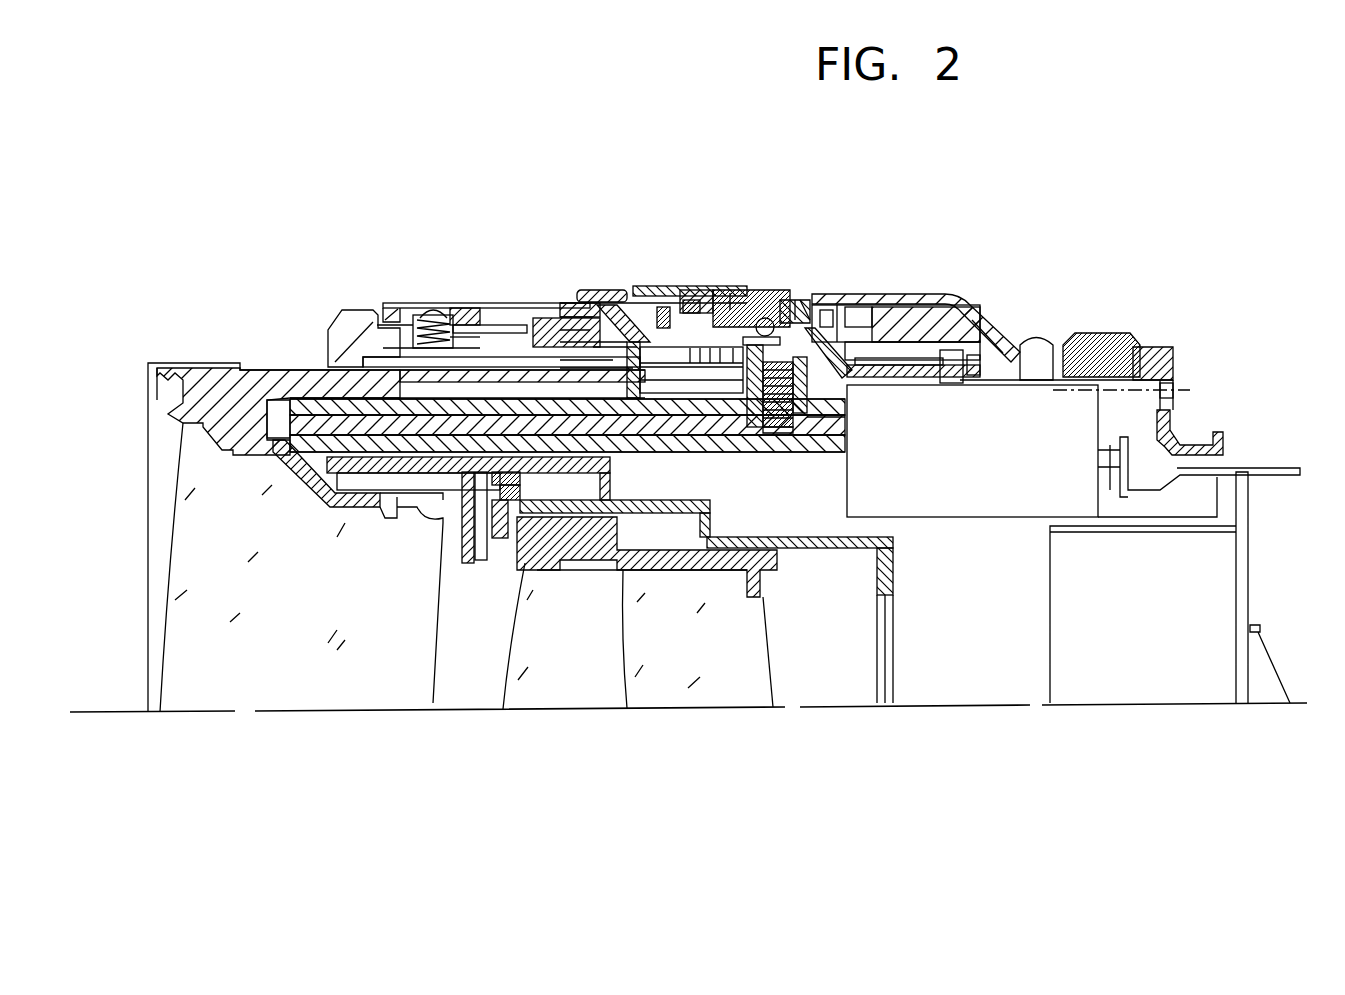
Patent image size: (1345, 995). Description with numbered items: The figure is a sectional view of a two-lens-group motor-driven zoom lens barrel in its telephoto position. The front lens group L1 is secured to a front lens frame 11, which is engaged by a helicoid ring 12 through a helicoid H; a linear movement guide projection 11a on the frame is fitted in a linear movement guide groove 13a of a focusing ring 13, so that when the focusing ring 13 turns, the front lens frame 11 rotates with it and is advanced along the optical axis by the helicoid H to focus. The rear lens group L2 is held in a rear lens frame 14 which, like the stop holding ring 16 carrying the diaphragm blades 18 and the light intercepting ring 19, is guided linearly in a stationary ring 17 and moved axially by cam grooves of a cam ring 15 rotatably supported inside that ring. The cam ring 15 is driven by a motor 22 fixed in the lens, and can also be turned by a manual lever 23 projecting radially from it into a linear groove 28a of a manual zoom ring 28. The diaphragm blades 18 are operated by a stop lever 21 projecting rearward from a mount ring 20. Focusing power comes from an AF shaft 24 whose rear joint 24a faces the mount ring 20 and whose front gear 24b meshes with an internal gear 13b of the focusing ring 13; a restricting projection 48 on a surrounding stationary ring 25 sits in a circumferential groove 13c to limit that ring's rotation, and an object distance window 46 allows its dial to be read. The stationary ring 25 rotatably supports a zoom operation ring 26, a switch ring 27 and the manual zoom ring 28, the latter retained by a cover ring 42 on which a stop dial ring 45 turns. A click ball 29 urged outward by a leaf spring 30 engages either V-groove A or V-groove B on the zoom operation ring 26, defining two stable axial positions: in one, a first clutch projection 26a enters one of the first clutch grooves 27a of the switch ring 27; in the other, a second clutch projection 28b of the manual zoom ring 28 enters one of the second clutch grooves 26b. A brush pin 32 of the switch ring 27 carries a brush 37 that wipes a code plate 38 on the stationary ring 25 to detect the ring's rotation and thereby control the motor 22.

The front lens frame 11 is at (238, 366).
The linear movement guide projection 11a is at (487, 303).
The helicoid ring 12 is at (540, 303).
The focusing ring 13 is at (553, 399).
The linear movement guide groove 13a is at (398, 370).
The internal gear 13b is at (797, 395).
The circumferential groove 13c is at (458, 345).
The rear lens frame 14 is at (625, 700).
The cam ring 15 is at (663, 440).
The stop holding ring 16 is at (407, 430).
The stationary ring 17 is at (723, 427).
The diaphragm blades 18 is at (475, 560).
The light intercepting ring 19 is at (893, 570).
The mount ring 20 is at (1173, 411).
The stop lever 21 is at (1293, 466).
The motor 22 is at (972, 451).
The manual lever 23 is at (980, 333).
The AF shaft 24 is at (1153, 347).
The joint 24a is at (1173, 378).
The gear 24b is at (803, 415).
The stationary ring 25 is at (410, 357).
The zoom operation ring 26 is at (780, 300).
The first clutch projection 26a is at (697, 290).
The second clutch grooves 26b is at (845, 300).
The switch ring 27 is at (620, 290).
The first clutch grooves 27a is at (687, 286).
The manual zoom ring 28 is at (927, 320).
The linear groove 28a is at (995, 322).
The second clutch projection 28b is at (877, 320).
The click ball 29 is at (810, 300).
The leaf spring 30 is at (830, 300).
The brush pin 32 is at (640, 293).
The brush 37 is at (710, 293).
The code plate 38 is at (760, 297).
The cover ring 42 is at (957, 302).
The stop dial ring 45 is at (1123, 337).
The object distance window 46 is at (472, 325).
The restricting projection 48 is at (420, 303).
The helicoid H is at (310, 393).
The V-groove A is at (730, 293).
The V-groove B is at (795, 300).
The front lens group L1 is at (263, 693).
The rear lens group L2 is at (675, 693).